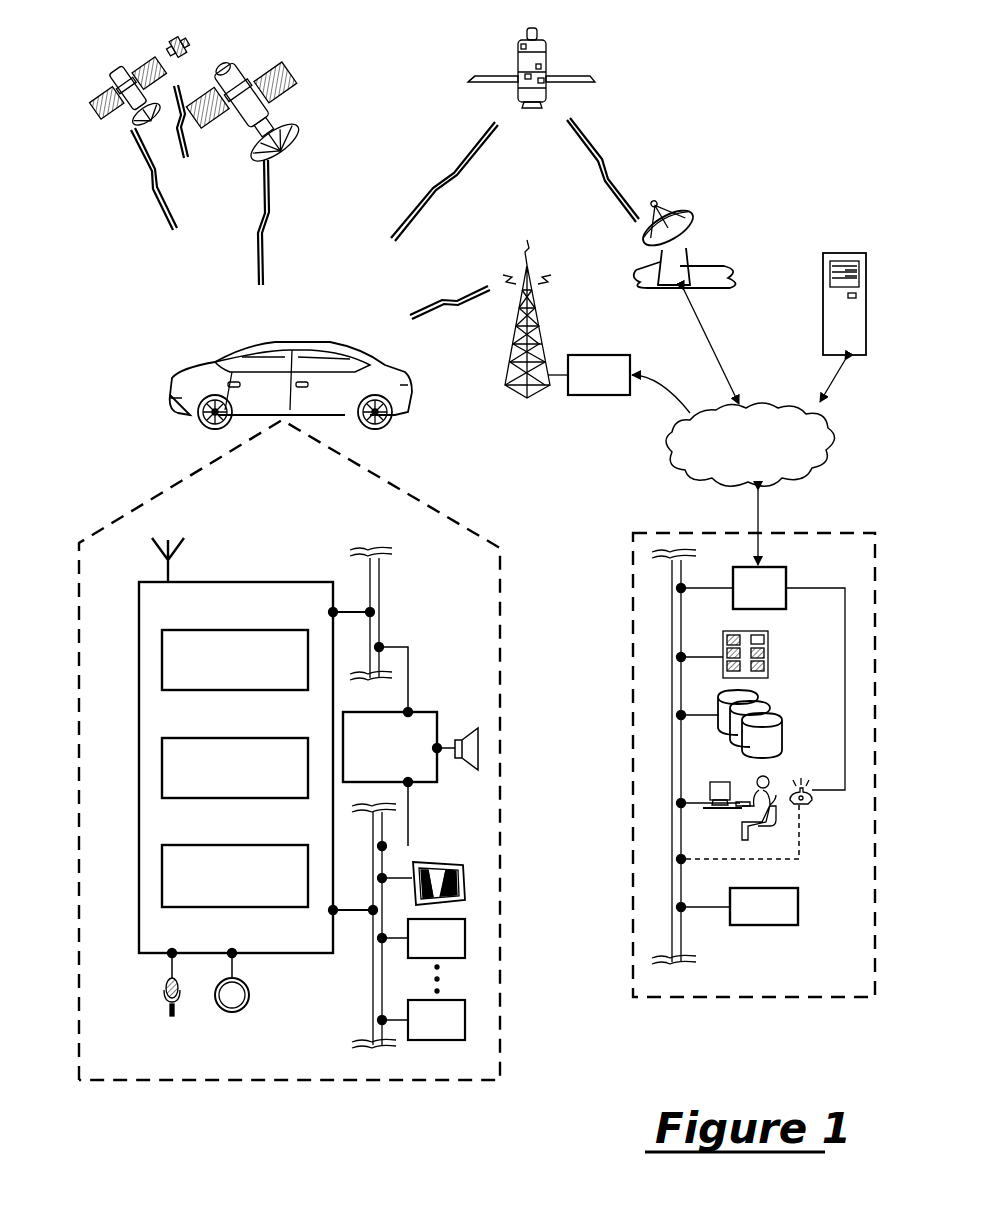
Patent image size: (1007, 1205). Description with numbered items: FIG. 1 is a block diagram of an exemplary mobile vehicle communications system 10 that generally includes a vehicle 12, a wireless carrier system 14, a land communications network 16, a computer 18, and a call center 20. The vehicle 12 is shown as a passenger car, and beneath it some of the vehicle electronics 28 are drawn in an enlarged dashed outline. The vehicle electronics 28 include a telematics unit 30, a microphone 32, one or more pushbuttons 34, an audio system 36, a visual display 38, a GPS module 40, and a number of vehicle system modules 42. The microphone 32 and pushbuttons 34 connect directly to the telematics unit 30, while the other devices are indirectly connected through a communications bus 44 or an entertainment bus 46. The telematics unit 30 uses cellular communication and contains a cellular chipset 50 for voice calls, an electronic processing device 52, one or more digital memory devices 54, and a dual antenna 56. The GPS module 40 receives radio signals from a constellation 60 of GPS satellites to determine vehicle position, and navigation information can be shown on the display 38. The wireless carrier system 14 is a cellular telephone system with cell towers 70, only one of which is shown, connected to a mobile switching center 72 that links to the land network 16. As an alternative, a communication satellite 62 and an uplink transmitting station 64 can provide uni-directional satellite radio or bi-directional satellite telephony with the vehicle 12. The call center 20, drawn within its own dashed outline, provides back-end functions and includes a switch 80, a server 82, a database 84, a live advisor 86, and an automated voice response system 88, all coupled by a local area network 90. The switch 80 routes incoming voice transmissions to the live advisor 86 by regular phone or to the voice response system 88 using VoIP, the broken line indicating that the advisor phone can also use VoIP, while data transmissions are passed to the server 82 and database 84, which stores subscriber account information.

The mobile vehicle communications system 10 is at (786, 72).
The vehicle 12 is at (172, 396).
The wireless carrier system 14 is at (514, 415).
The land communications network 16 is at (750, 484).
The computer 18 is at (868, 316).
The call center 20 is at (740, 998).
The vehicle electronics 28 is at (280, 1082).
The telematics unit 30 is at (288, 581).
The microphone 32 is at (162, 994).
The pushbutton 34 is at (250, 996).
The audio system 36 is at (410, 777).
The visual display 38 is at (432, 860).
The GPS module 40 is at (422, 956).
The vehicle system module 42 is at (422, 1020).
The communications bus 44 is at (372, 984).
The entertainment bus 46 is at (380, 586).
The cellular chipset 50 is at (235, 660).
The electronic processing device 52 is at (235, 768).
The digital memory device 54 is at (235, 876).
The dual antenna 56 is at (166, 570).
The constellation of GPS satellites 60 is at (332, 124).
The communication satellite 62 is at (549, 50).
The uplink transmitting station 64 is at (708, 258).
The cell tower 70 is at (538, 321).
The mobile switching center 72 is at (619, 384).
The switch 80 is at (761, 678).
The server 82 is at (770, 660).
The database 84 is at (784, 736).
The live advisor 86 is at (732, 820).
The automated voice response system 88 is at (738, 906).
The local area network 90 is at (683, 945).